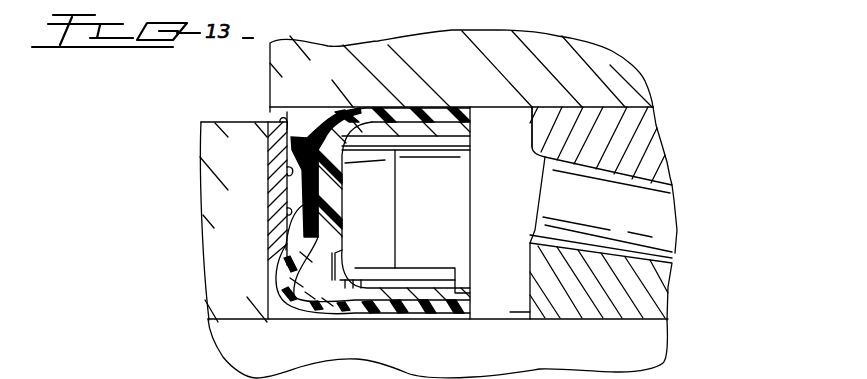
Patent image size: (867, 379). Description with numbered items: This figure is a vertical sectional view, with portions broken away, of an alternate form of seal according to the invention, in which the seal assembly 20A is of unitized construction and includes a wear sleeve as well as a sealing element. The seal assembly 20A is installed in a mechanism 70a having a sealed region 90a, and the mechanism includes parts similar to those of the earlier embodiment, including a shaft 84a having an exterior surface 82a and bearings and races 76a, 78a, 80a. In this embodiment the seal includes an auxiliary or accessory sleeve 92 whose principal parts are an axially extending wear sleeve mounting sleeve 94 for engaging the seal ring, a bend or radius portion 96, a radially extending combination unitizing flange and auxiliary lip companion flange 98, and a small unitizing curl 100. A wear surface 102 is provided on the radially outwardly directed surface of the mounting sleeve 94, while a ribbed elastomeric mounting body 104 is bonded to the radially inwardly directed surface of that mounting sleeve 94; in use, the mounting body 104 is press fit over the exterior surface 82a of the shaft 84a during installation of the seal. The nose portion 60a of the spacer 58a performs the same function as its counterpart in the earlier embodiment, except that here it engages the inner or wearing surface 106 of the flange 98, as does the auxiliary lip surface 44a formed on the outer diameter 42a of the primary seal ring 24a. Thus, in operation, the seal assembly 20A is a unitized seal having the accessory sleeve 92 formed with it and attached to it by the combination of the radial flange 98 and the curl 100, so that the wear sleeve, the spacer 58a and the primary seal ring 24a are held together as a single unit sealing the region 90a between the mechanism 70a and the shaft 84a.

The seal assembly 20A is at (269, 119).
The primary seal ring 24a is at (266, 268).
The outer diameter of primary seal ring 42a is at (292, 246).
The auxiliary lip surface 44a is at (280, 229).
The spacer 58a is at (295, 122).
The nose portion 60a is at (284, 124).
The mechanism 70a is at (657, 100).
The bearings and races 76a is at (651, 170).
The bearings and races 78a is at (664, 236).
The bearings and races 80a is at (665, 292).
The exterior surface of shaft 82a is at (515, 313).
The shaft 84a is at (523, 358).
The sealed region 90a is at (526, 197).
The auxiliary or accessory sleeve 92 is at (278, 305).
The wear sleeve mounting sleeve 94 is at (359, 262).
The bend or radius portion 96 is at (293, 280).
The combination unitizing flange and auxiliary lip companion flange 98 is at (268, 222).
The unitizing curl 100 is at (455, 268).
The wear surface 102 is at (382, 264).
The ribbed elastomeric mounting body 104 is at (390, 312).
The inner or wearing surface 106 is at (268, 171).